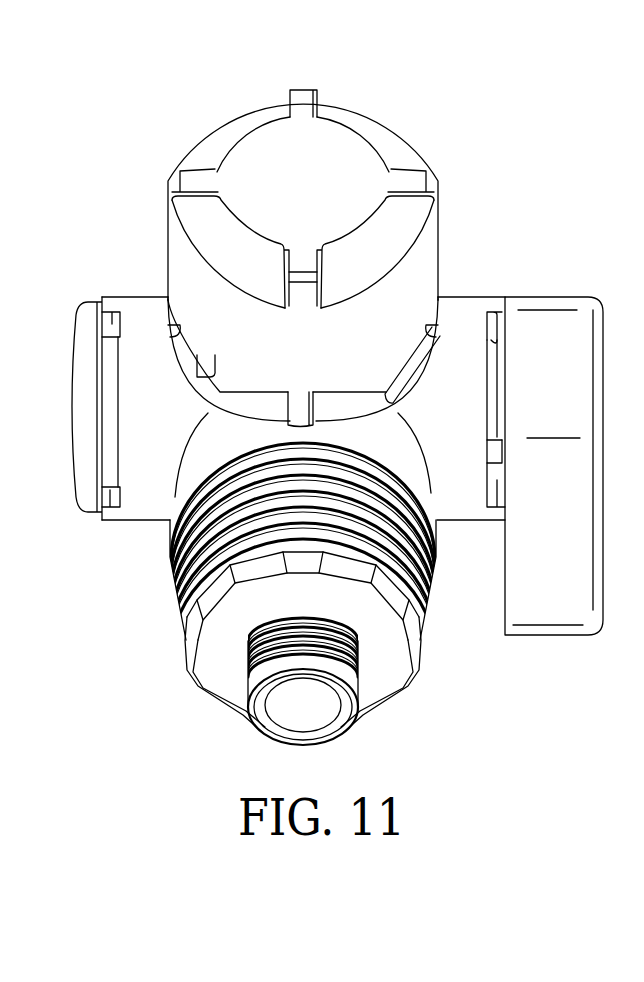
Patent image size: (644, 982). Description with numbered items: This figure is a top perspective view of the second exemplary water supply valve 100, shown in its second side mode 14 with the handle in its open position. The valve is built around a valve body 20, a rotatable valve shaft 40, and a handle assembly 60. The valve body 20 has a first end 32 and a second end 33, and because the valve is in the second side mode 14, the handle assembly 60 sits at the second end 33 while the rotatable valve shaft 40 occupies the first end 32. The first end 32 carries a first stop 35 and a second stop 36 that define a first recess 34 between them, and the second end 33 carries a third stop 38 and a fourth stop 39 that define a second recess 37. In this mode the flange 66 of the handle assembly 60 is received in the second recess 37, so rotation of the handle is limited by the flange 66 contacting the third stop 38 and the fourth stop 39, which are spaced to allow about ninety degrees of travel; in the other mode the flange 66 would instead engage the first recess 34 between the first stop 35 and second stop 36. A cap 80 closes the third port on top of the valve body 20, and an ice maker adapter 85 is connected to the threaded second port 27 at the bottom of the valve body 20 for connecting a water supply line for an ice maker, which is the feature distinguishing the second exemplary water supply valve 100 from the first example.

The second side mode 14 is at (503, 145).
The valve body 20 is at (142, 540).
The second port 27 is at (173, 598).
The first end 32 is at (108, 296).
The second end 33 is at (498, 296).
The first recess 34 is at (112, 408).
The first stop 35 is at (113, 330).
The second stop 36 is at (113, 487).
The second recess 37 is at (495, 403).
The third stop 38 is at (493, 328).
The fourth stop 39 is at (493, 503).
The rotatable valve shaft 40 is at (101, 407).
The handle assembly 60 is at (531, 435).
The flange 66 is at (490, 470).
The cap 80 is at (244, 154).
The ice maker adapter 85 is at (205, 667).
The second exemplary water supply valve 100 is at (482, 680).